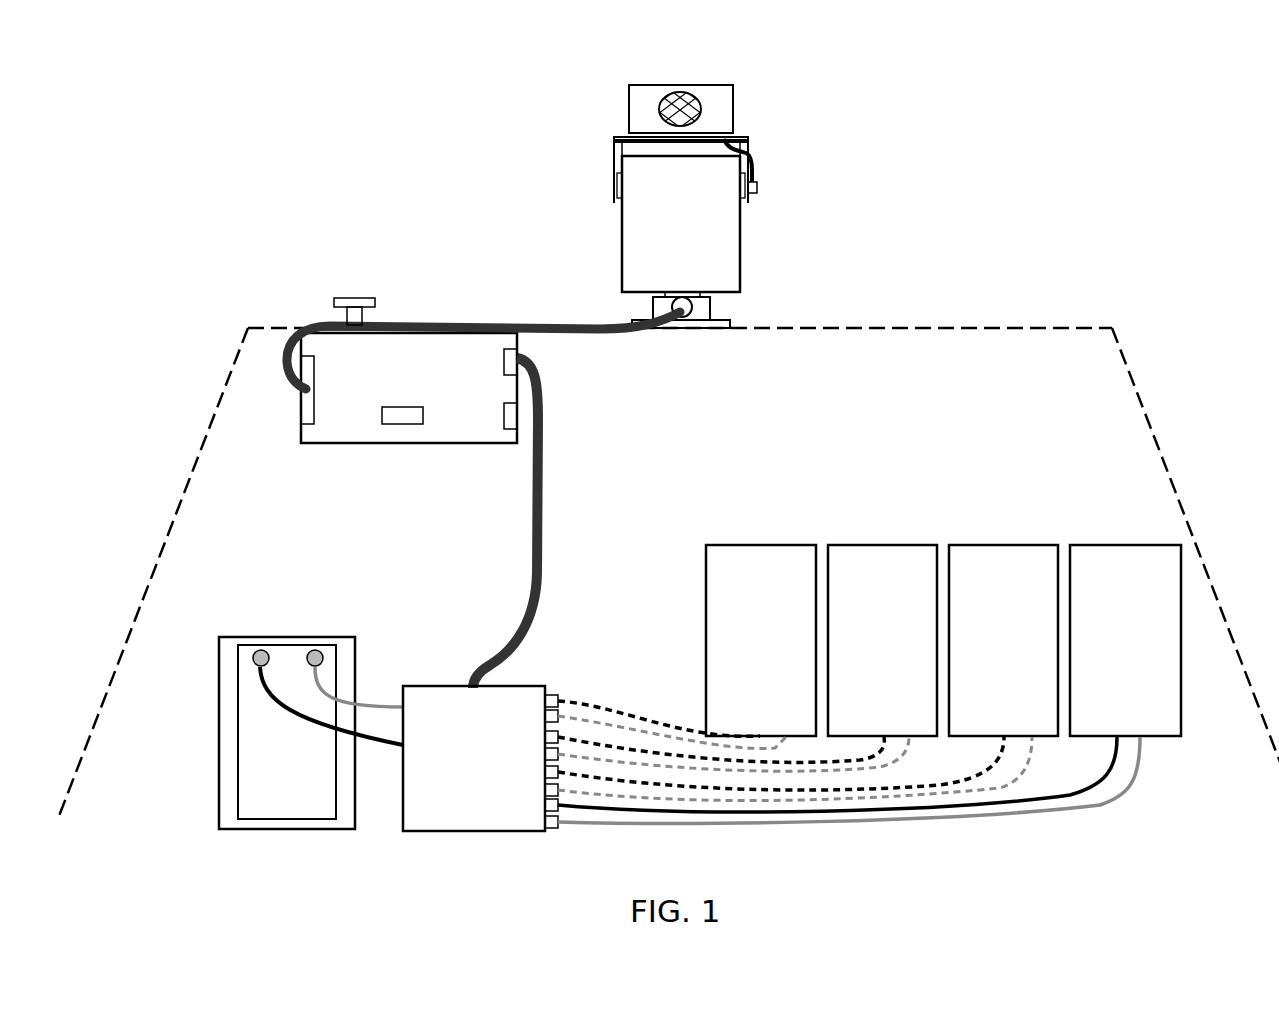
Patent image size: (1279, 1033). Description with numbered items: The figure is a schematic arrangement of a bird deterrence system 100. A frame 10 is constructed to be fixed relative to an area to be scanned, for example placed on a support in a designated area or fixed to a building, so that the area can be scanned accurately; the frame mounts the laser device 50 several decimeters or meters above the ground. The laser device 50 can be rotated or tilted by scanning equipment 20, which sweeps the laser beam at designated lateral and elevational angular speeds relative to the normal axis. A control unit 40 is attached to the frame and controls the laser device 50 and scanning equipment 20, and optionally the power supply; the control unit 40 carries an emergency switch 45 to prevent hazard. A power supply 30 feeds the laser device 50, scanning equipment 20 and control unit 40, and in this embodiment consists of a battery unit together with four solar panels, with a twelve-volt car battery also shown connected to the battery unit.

The bird deterrence system 100 is at (933, 221).
The frame 10 is at (1026, 330).
The scanning equipment 20 is at (693, 223).
The laser device 50 is at (701, 108).
The control unit 40 is at (438, 374).
The emergency switch 45 is at (348, 298).
The power supply 30 is at (703, 482).